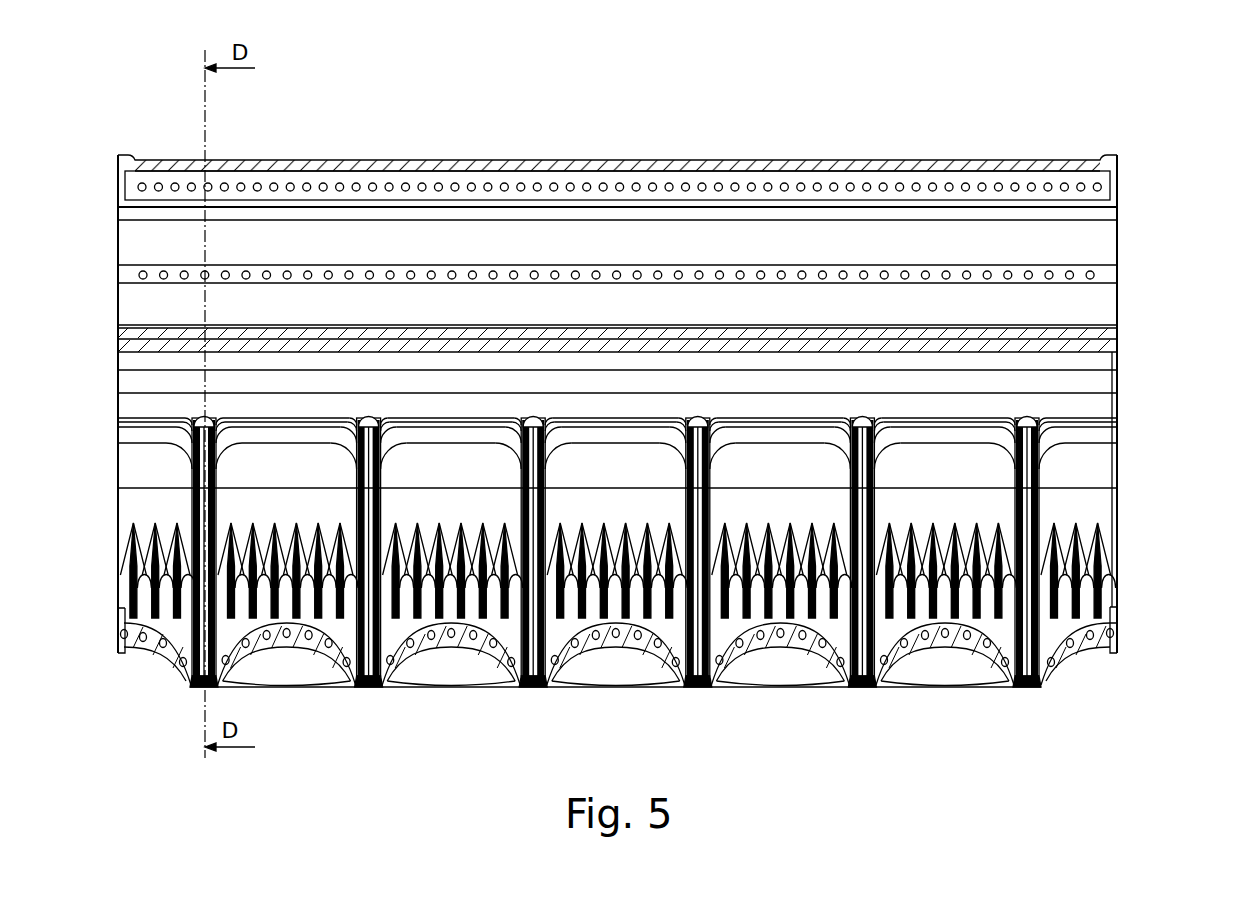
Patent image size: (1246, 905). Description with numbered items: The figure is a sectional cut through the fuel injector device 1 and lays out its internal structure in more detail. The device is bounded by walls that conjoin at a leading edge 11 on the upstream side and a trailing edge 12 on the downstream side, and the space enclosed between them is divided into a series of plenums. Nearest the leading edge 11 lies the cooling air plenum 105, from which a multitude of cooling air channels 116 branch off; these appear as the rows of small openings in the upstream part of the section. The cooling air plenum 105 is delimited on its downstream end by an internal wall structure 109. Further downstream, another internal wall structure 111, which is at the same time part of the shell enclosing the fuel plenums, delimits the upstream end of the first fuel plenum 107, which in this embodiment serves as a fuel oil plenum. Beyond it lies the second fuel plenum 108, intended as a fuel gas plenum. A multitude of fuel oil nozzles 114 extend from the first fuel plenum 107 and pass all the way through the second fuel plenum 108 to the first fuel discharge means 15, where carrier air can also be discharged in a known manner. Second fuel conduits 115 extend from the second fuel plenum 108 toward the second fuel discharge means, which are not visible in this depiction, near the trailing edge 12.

The fuel injector device 1 is at (1136, 246).
The leading edge 11 is at (1036, 158).
The trailing edge 12 is at (1001, 689).
The fuel discharge means 15 is at (535, 689).
The cooling air plenum 105 is at (937, 255).
The first fuel plenum 107 is at (910, 392).
The second fuel plenum 108 is at (617, 474).
The internal wall structure 109 is at (1116, 334).
The internal wall structure 111 is at (1118, 346).
The fuel oil nozzle 114 is at (874, 462).
The fuel gas conduits 115 is at (992, 620).
The cooling air channels 116 is at (247, 272).